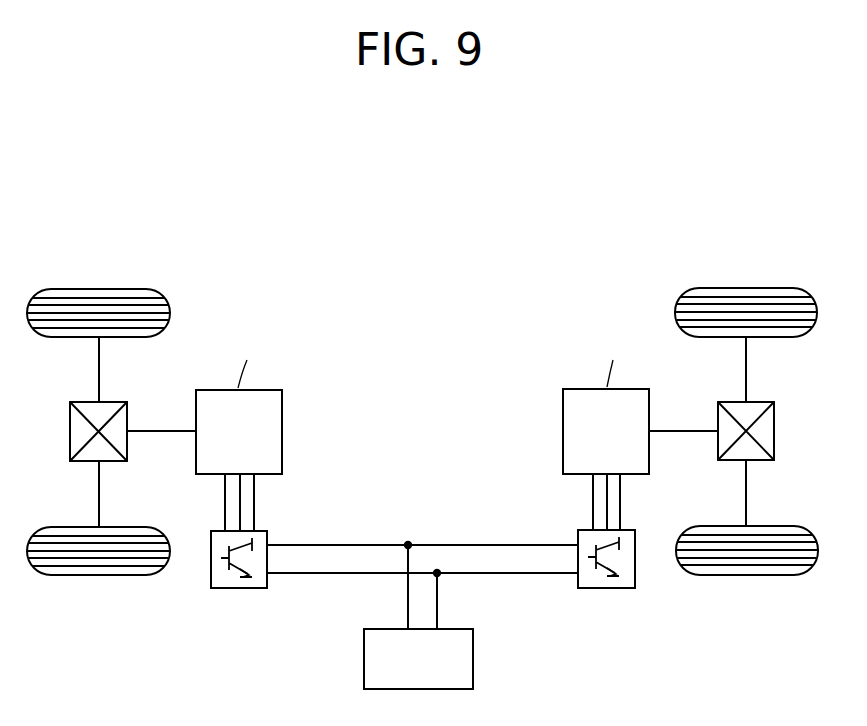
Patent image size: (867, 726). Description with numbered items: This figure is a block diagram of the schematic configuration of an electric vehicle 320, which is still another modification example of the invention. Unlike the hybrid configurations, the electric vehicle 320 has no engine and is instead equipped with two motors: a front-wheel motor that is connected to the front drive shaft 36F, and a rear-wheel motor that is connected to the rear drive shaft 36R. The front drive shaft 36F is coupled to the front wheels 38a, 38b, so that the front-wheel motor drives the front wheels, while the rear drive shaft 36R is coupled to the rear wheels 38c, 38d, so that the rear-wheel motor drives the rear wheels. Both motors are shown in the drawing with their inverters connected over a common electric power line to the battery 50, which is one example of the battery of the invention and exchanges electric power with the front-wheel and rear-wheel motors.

The electric vehicle 320 is at (498, 260).
The front wheel 38a is at (747, 283).
The front wheel 38b is at (745, 577).
The rear wheel 38c is at (99, 287).
The rear wheel 38d is at (98, 576).
The drive shaft 36R is at (155, 428).
The drive shaft 36F is at (677, 427).
The battery 50 is at (473, 657).